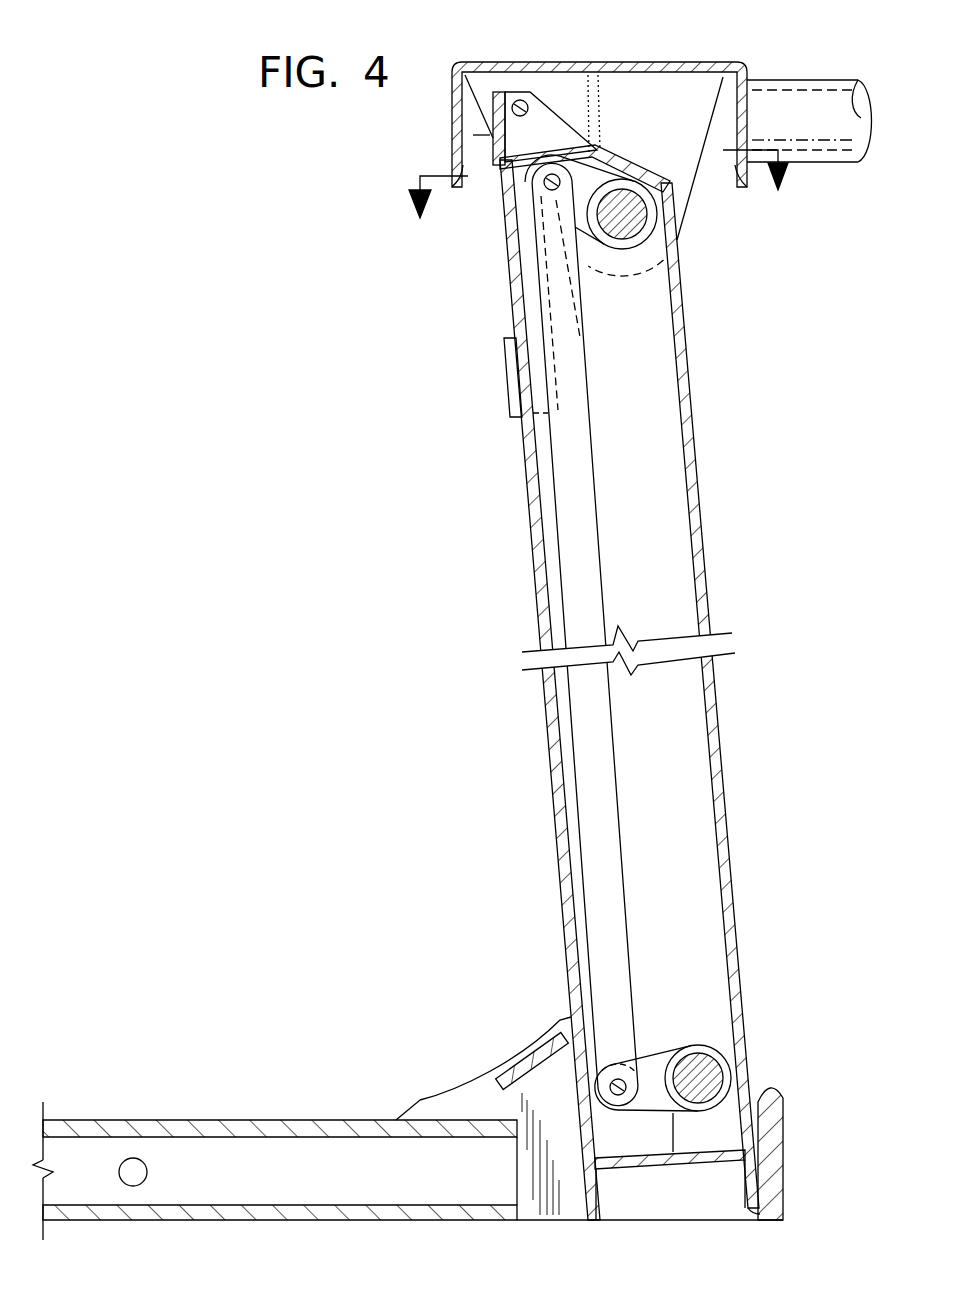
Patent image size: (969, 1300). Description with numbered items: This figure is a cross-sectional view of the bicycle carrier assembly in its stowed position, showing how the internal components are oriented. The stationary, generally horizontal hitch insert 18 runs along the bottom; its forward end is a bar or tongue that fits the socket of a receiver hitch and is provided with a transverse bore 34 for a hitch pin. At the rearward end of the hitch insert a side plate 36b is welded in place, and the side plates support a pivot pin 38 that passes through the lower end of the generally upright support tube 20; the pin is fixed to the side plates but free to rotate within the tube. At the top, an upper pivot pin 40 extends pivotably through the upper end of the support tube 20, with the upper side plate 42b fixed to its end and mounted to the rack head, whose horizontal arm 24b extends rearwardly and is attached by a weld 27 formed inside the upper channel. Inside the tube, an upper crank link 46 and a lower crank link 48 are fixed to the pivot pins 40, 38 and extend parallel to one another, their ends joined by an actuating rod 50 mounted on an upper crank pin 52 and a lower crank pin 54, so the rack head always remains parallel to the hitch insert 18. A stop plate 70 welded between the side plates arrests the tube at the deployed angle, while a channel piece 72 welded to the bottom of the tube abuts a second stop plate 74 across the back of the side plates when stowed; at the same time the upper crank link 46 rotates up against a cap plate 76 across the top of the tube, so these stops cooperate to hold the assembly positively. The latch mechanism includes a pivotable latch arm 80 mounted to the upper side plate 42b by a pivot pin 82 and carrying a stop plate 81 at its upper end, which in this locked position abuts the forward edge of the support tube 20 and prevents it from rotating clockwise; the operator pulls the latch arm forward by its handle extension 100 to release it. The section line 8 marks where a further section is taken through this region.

The section line 8- 8 is at (599, 196).
The hitch insert 18 is at (240, 1125).
The support tube 20 is at (690, 448).
The horizontal arm 24b is at (800, 100).
The weld 27 is at (490, 165).
The transverse bore 34 is at (130, 1160).
The side plate 36b is at (452, 1102).
The pivot pin 38 is at (713, 1063).
The upper pivot pin 40 is at (640, 220).
The upper side plate 42b is at (658, 100).
The upper crank link 46 is at (598, 237).
The lower crank link 48 is at (665, 1060).
The actuating rod 50 is at (568, 487).
The upper crank pin 52 is at (545, 186).
The lower crank pin 54 is at (623, 1085).
The stop plate 70 is at (518, 1070).
The channel piece 72 is at (748, 1175).
The second stop plate 74 is at (780, 1108).
The cap plate 76 is at (560, 142).
The latch arm 80 is at (590, 371).
The stop plate 81 is at (507, 90).
The pivot pin 82 is at (521, 100).
The handle extension 100 is at (505, 362).